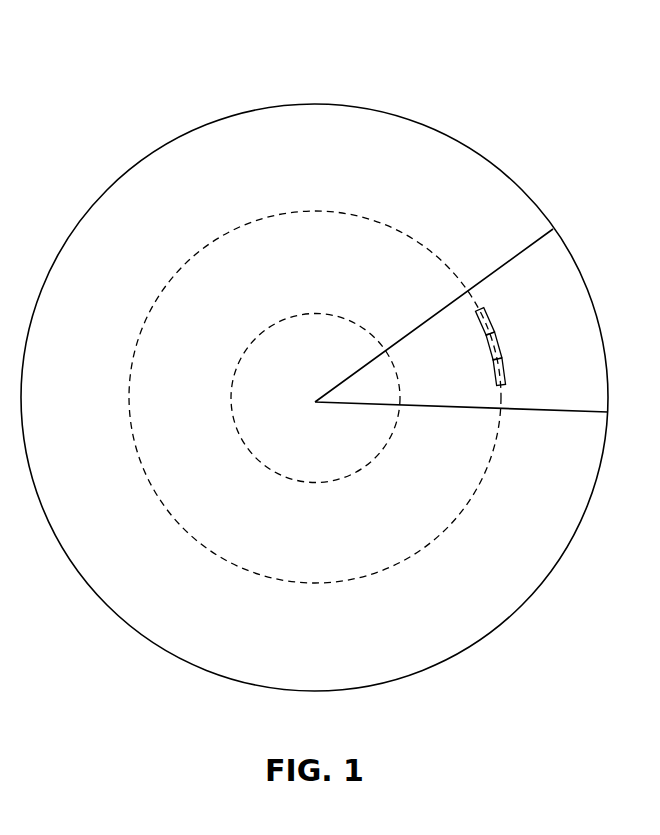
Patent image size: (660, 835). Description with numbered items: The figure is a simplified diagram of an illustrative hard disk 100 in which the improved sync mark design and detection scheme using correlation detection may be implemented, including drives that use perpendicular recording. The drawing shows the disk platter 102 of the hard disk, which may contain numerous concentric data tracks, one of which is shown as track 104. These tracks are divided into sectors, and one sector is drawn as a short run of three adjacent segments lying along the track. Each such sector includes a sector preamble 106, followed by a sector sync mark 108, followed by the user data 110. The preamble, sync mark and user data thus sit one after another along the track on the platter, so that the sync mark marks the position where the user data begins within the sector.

The hard disk 100 is at (337, 49).
The disk platter 102 is at (78, 215).
The track 104 is at (145, 328).
The sector preamble 106 is at (497, 320).
The sector sync mark 108 is at (505, 350).
The user data 110 is at (490, 382).